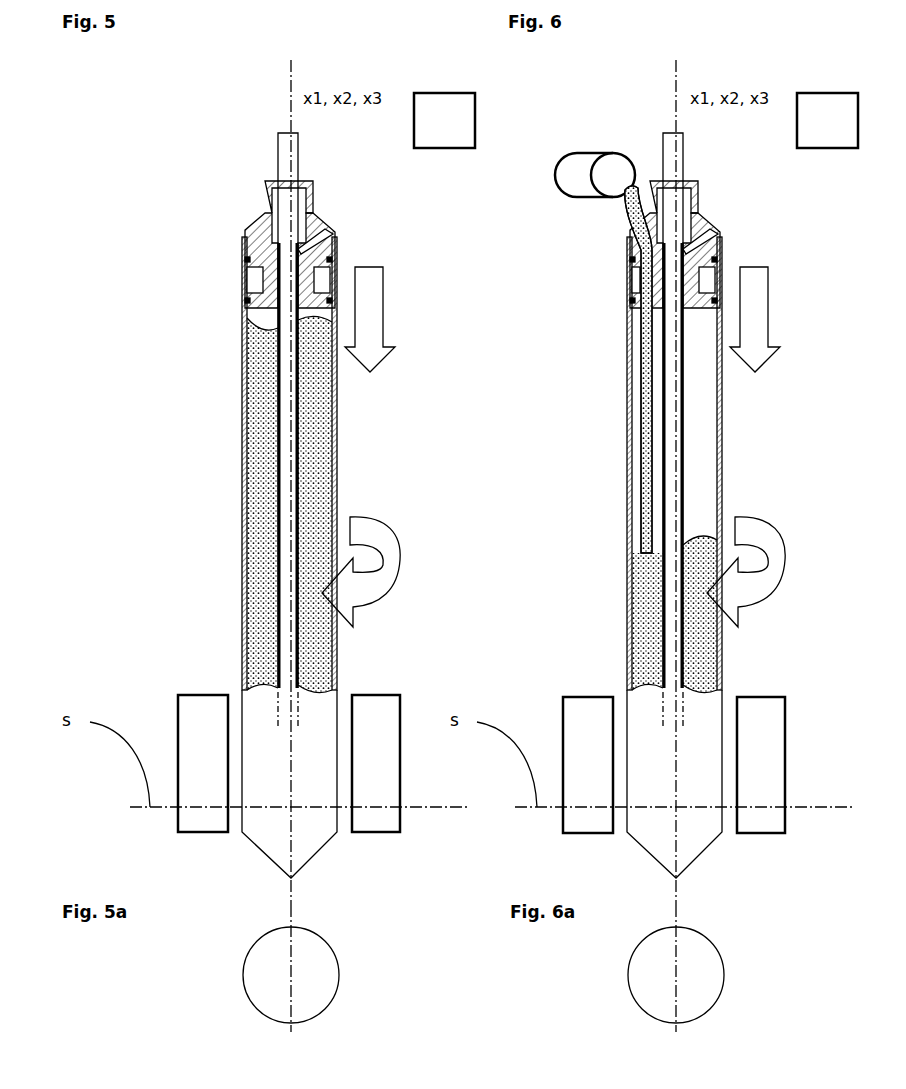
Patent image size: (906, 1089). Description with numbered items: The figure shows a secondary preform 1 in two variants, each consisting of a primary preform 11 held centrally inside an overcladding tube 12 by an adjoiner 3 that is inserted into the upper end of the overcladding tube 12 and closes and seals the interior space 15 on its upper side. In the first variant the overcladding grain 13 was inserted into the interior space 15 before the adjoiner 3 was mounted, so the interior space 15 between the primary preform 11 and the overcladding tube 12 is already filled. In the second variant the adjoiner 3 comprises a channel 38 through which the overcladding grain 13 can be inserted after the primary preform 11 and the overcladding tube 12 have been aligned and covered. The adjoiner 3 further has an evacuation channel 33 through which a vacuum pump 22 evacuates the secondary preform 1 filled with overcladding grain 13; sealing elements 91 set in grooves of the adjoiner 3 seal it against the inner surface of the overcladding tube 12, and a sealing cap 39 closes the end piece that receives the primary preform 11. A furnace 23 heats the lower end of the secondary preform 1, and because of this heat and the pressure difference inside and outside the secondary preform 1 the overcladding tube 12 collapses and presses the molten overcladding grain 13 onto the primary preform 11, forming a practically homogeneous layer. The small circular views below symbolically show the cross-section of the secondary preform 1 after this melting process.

In FIG. 5, the secondary preform 1 is at (165, 538).
In FIG. 5A, the secondary preform 1 is at (268, 987).
In FIG. 6, the secondary preform 1 is at (626, 505).
In FIG. 6A, the secondary preform 1 is at (637, 990).
In FIG. 5, the adjoiner 3 is at (255, 228).
In FIG. 6, the adjoiner 3 is at (718, 254).
In FIG. 5, the primary preform 11 is at (290, 447).
In FIG. 6, the primary preform 11 is at (621, 430).
In FIG. 5, the overcladding tube 12 is at (243, 422).
In FIG. 6, the overcladding tube 12 is at (641, 557).
In FIG. 5, the overcladding grain 13 is at (270, 537).
In FIG. 6, the overcladding grain 13 is at (611, 575).
In FIG. 5, the interior space 15 is at (252, 504).
In FIG. 6, the interior space 15 is at (726, 542).
In FIG. 5, the vacuum pump 22 is at (331, 229).
In FIG. 6, the vacuum pump 22 is at (786, 161).
In FIG. 5, the furnace 23 is at (289, 763).
In FIG. 6, the furnace 23 is at (674, 765).
In FIG. 5, the evacuation channel 33 is at (331, 233).
In FIG. 6, the channel 38 is at (605, 369).
In FIG. 5, the sealing cap 39 is at (318, 194).
In FIG. 6, the sealing cap 39 is at (698, 178).
In FIG. 5, the sealing elements 91 is at (247, 295).